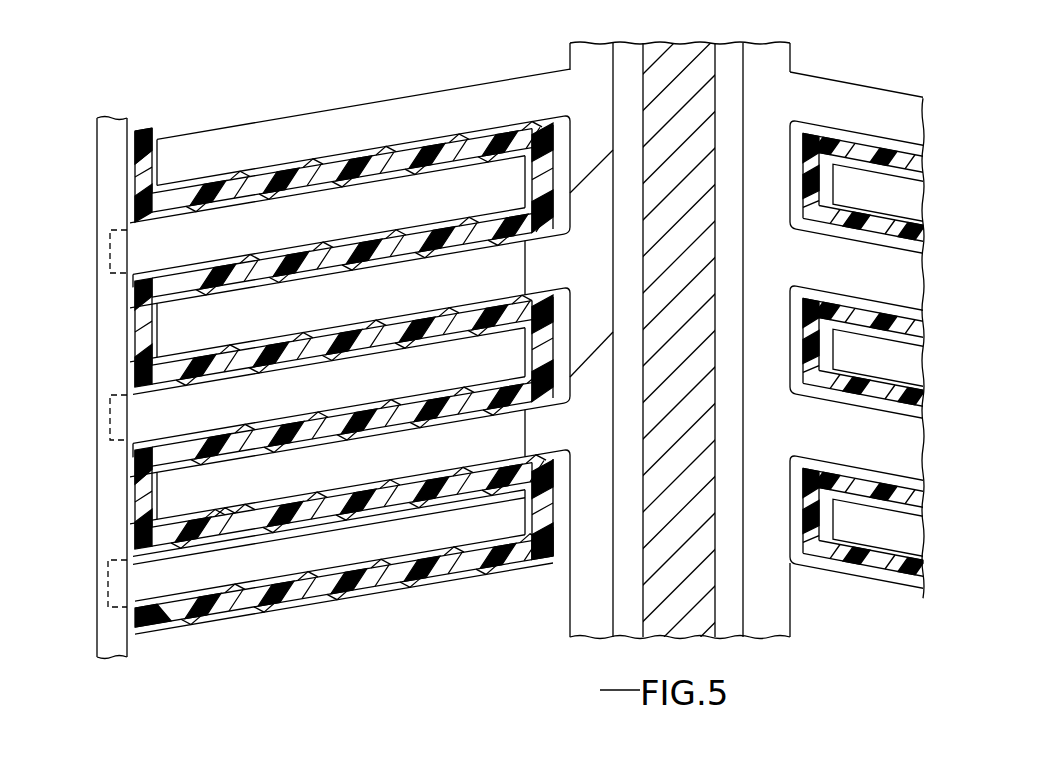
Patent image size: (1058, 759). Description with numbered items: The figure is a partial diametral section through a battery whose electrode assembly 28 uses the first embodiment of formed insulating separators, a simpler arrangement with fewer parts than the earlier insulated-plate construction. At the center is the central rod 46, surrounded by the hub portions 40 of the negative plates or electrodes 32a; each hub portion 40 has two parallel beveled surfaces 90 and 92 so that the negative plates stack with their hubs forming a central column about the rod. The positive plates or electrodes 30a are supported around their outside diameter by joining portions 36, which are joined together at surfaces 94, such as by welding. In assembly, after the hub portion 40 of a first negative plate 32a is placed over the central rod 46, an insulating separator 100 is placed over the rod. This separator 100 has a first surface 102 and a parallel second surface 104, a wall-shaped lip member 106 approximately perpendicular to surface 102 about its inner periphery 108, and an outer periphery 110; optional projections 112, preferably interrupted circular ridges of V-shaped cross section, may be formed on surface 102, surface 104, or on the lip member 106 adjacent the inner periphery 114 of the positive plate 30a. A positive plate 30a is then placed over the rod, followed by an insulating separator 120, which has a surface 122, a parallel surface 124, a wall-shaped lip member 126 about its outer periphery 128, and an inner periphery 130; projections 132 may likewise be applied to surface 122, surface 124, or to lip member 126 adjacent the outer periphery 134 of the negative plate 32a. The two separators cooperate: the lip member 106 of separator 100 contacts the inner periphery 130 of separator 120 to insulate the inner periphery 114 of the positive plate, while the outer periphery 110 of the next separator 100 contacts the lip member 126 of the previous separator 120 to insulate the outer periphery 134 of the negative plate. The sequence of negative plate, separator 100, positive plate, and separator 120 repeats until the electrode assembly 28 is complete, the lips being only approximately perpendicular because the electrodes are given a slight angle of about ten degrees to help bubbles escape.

The electrode assembly 28 is at (341, 72).
The positive plate or electrode 30a is at (110, 258).
The negative plate or electrode 32a is at (420, 107).
The joining portions 36 is at (122, 213).
The hub portion 40 is at (578, 95).
The central rod 46 is at (687, 63).
The beveled surface 90 is at (597, 171).
The beveled surface 92 is at (600, 360).
The surfaces 94 is at (108, 203).
The insulating separator 100 is at (330, 250).
The first surface 102 is at (310, 585).
The second surface 104 is at (353, 596).
The lip member 106 is at (557, 178).
The inner periphery 108 is at (548, 566).
The outer periphery 110 is at (150, 280).
The projections 112 is at (420, 582).
The inner periphery 114 is at (525, 192).
The insulating separator 120 is at (325, 170).
The surface 122 is at (297, 503).
The surface 124 is at (405, 507).
The lip member 126 is at (136, 152).
The outer periphery 128 is at (143, 592).
The inner periphery 130 is at (528, 116).
The projections 132 is at (240, 510).
The outer periphery 134 is at (143, 185).